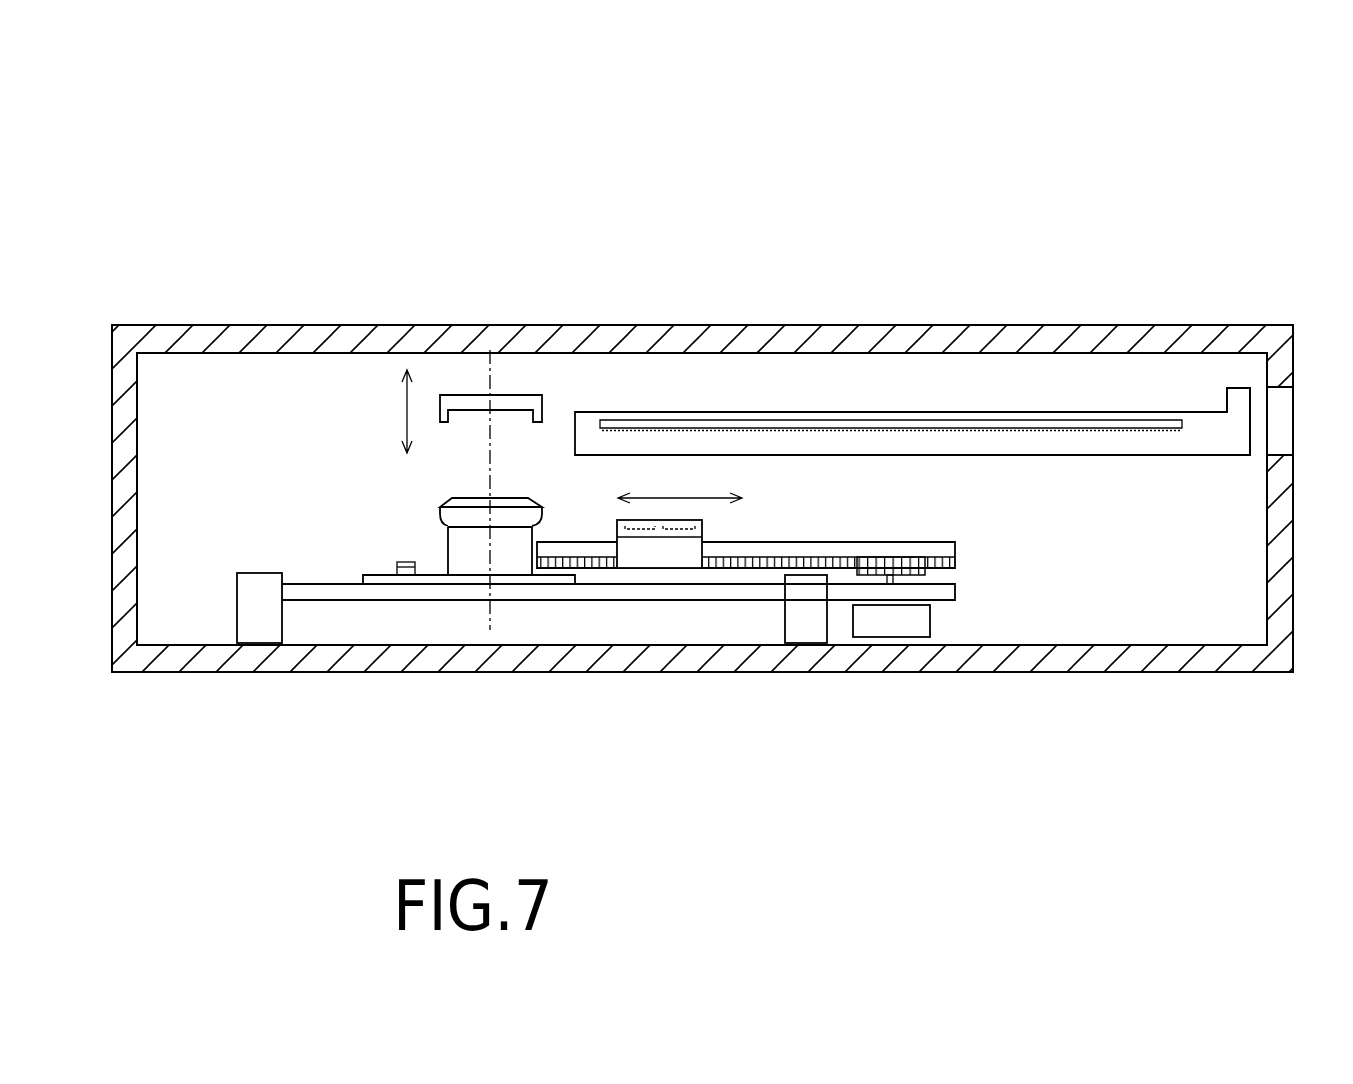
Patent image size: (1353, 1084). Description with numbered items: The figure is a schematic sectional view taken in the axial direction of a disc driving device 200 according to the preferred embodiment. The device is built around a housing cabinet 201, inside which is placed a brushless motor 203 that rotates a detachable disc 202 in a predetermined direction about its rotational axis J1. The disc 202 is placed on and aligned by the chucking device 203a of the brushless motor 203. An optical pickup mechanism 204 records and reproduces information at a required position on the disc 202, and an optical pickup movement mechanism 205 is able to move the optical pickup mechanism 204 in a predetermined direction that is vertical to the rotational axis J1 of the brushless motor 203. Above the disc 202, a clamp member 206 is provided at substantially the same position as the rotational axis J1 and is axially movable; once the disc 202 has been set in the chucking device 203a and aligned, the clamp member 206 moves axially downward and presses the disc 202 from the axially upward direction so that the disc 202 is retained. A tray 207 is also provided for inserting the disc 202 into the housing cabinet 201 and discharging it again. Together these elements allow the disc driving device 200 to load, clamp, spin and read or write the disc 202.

The disc driving device 200 is at (238, 163).
The housing cabinet 201 is at (1022, 337).
The detachable disc 202 is at (912, 520).
The brushless motor 203 is at (347, 660).
The chucking device 203a is at (463, 517).
The optical pickup mechanism 204 is at (658, 552).
The optical pickup movement mechanism 205 is at (908, 618).
The clamp member 206 is at (517, 408).
The tray 207 is at (1205, 442).
The rotational axis J1 is at (490, 471).